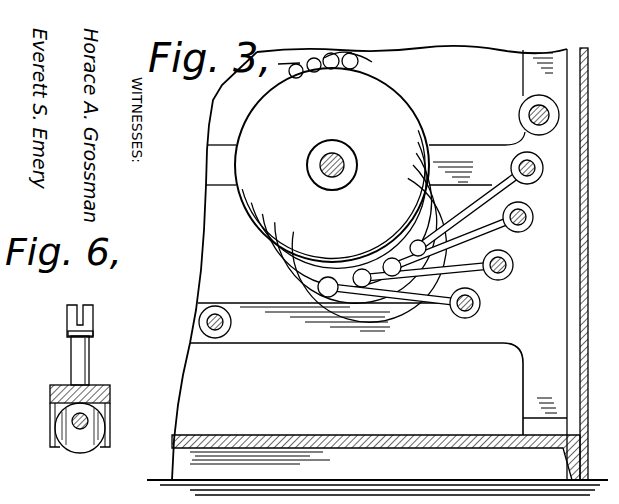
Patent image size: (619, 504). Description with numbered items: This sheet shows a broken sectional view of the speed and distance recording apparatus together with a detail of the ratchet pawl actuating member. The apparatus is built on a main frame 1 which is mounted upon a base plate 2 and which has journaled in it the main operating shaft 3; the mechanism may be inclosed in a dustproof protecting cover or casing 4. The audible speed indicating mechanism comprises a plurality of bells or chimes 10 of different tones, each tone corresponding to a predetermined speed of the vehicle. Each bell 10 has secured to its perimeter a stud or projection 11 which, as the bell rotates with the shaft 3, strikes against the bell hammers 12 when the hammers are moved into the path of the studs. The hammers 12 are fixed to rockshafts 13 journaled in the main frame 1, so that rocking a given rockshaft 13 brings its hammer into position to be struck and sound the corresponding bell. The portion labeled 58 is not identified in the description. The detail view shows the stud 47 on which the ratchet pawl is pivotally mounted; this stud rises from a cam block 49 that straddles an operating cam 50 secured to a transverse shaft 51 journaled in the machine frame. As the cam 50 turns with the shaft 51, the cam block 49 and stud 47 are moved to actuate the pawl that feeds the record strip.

In FIG. 3, the main frame 1 is at (535, 73).
In FIG. 3, the base plate 2 is at (380, 436).
In FIG. 3, the main operating shaft 3 is at (323, 168).
In FIG. 3, the casing 4 is at (582, 285).
In FIG. 3, the bells 10 is at (274, 233).
In FIG. 3, the stud 11 is at (291, 70).
In FIG. 3, the bell hammers 12 is at (428, 300).
In FIG. 3, the rockshafts 13 is at (523, 212).
In FIG. 3, the stud 58 is at (528, 112).
In FIG. 6, the stud 47 is at (85, 352).
In FIG. 6, the cam block 49 is at (110, 391).
In FIG. 6, the operating cam 50 is at (84, 446).
In FIG. 6, the transverse shaft 51 is at (77, 428).